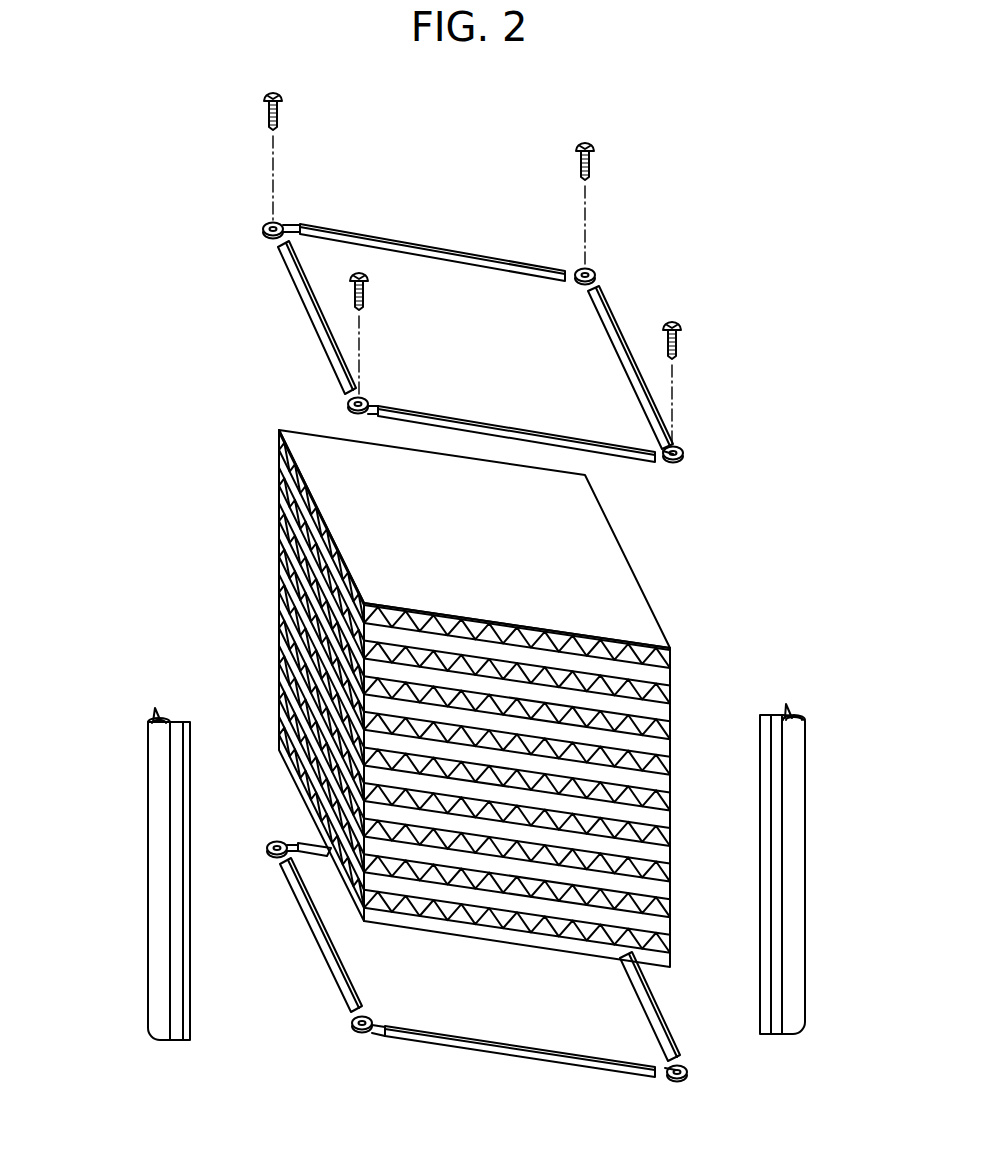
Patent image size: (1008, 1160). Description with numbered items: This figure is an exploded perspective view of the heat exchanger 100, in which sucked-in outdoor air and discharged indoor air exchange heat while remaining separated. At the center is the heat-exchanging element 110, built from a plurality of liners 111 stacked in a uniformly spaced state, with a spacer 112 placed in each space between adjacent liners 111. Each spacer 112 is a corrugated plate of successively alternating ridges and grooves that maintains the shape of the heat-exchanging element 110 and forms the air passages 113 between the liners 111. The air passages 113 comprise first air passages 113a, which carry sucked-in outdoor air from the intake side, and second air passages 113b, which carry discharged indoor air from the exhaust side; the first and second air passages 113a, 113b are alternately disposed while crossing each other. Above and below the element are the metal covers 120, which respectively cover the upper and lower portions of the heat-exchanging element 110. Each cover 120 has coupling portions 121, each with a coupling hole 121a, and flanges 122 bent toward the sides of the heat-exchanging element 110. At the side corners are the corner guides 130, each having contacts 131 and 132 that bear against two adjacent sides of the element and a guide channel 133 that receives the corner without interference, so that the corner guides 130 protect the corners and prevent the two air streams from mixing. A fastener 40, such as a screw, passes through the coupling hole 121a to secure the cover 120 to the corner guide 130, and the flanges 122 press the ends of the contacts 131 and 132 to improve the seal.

The heat exchanger 100 is at (150, 153).
The heat-exchanging element 110 is at (458, 698).
The liner 111 is at (605, 712).
The spacer 112 is at (628, 772).
The air passage 113 is at (458, 692).
The first air passage 113a is at (572, 779).
The second air passage 113b is at (325, 593).
The metal cover 120 is at (458, 276).
The coupling portion 121 is at (510, 669).
The coupling hole 121a is at (678, 449).
The flange 122 is at (612, 318).
The corner guide 130 is at (471, 845).
The contact 131 is at (185, 720).
The contact 132 is at (158, 718).
The guide channel 133 is at (150, 717).
The fastener 40 is at (679, 341).